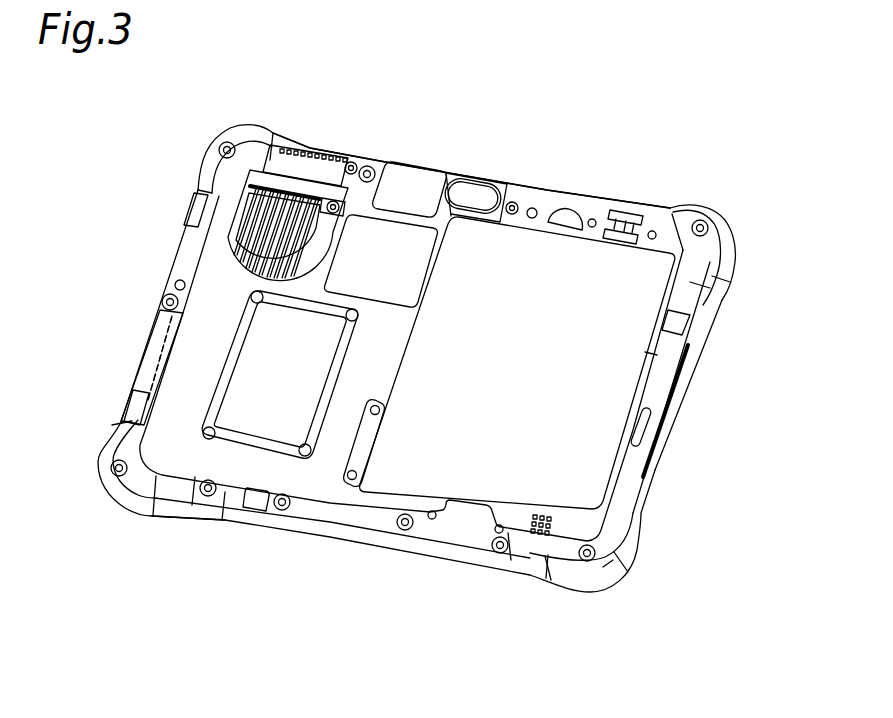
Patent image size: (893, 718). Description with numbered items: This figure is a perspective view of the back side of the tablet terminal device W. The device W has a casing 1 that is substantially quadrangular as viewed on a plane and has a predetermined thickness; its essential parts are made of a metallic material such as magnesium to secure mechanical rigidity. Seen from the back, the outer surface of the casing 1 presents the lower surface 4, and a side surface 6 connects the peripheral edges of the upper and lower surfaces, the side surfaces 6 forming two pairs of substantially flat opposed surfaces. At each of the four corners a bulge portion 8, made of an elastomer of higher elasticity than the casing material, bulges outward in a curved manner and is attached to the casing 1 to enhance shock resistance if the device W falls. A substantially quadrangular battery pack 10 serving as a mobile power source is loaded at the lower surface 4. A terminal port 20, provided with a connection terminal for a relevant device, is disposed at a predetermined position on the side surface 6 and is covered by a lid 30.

The casing 1 is at (165, 283).
The lower surface 4 is at (238, 483).
The side surface 6 is at (480, 177).
The bulge portion 8 is at (213, 142).
The battery pack 10 is at (593, 360).
The terminal port 20 is at (163, 360).
The lid 30 is at (155, 322).
The tablet terminal device W is at (437, 169).